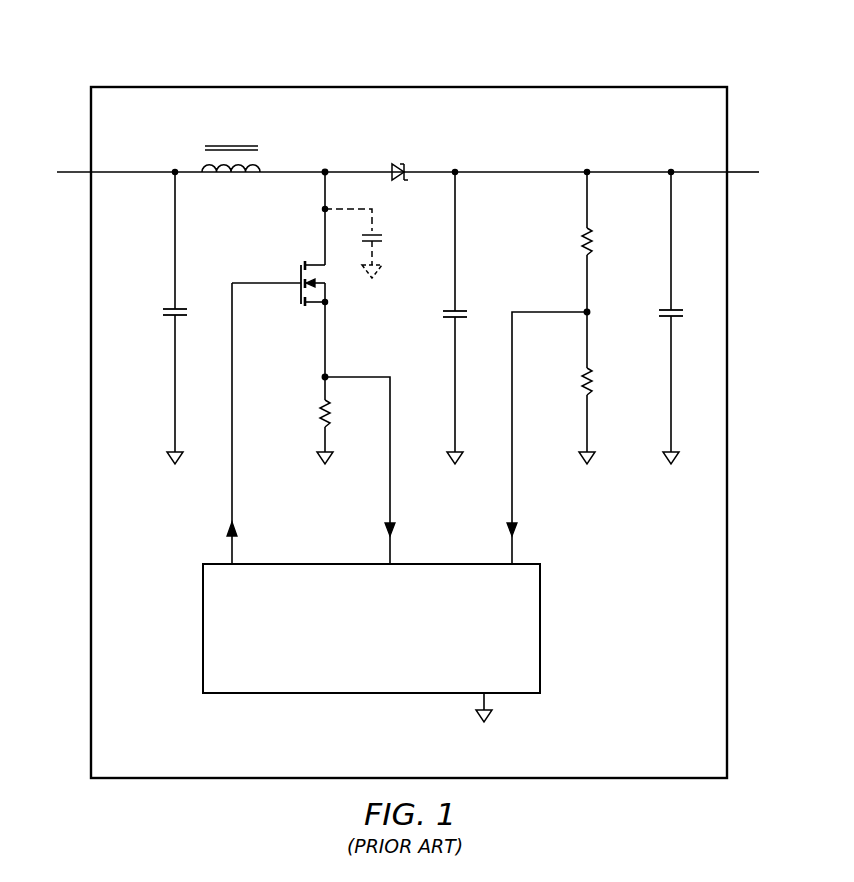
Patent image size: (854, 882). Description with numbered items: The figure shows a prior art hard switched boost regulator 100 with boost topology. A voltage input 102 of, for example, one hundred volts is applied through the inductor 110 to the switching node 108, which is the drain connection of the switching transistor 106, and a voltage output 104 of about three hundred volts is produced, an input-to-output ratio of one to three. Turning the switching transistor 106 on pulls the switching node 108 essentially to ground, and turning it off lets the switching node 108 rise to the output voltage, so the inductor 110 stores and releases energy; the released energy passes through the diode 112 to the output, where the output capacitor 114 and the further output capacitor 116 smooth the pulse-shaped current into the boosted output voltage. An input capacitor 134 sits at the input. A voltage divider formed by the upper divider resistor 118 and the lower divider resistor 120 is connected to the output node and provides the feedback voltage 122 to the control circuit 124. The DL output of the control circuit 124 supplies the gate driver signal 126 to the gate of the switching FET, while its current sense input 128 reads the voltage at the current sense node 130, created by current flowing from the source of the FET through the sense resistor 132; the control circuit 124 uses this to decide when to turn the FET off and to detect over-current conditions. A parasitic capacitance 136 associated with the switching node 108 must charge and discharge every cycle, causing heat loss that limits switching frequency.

The boost regulator 100 is at (528, 86).
The voltage input 102 is at (76, 170).
The voltage output 104 is at (742, 170).
The switching transistor 106 is at (298, 297).
The switching node 108 is at (321, 170).
The L1 inductor 110 is at (240, 176).
The D1 diode 112 is at (399, 181).
The C2 capacitor 114 is at (443, 313).
The C3 capacitor 116 is at (659, 313).
The R1 resistor 118 is at (581, 240).
The R2 resistor 120 is at (581, 382).
The feedback voltage 122 is at (514, 560).
The control circuit 124 is at (320, 697).
The gate driver signal 126 is at (229, 560).
The current sense input 128 is at (392, 560).
The current sense node 130 is at (321, 376).
The R1 resistor 132 is at (318, 413).
The C1 capacitor 134 is at (163, 312).
The parasitic capacitance 136 is at (384, 239).